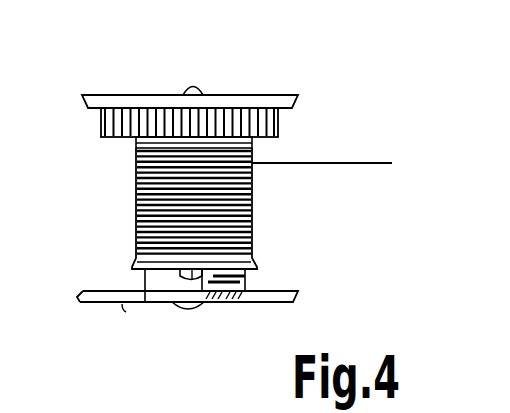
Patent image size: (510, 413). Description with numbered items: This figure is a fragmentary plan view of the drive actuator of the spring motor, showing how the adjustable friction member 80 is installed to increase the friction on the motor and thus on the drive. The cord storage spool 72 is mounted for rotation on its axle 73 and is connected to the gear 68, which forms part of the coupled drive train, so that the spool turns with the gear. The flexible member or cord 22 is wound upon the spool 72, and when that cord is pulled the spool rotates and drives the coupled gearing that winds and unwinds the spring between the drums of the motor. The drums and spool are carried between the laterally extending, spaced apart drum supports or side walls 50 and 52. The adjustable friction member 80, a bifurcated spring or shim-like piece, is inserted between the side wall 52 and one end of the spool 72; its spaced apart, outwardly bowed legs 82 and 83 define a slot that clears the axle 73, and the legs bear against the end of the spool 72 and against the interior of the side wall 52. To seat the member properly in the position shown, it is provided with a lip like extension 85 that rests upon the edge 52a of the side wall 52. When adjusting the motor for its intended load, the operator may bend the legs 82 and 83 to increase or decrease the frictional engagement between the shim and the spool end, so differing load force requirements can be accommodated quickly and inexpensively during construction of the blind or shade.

The drum support or side wall 50 is at (230, 102).
The gear 68 is at (168, 117).
The flexible member or cord 22 is at (347, 164).
The cord storage spool 72 is at (252, 209).
The bowed leg 82 is at (157, 278).
The bowed leg 83 is at (245, 276).
The axle 73 is at (195, 276).
The lip like extension 85 is at (221, 305).
The drum support or side wall 52 is at (128, 306).
The edge of side wall 52a is at (82, 294).
The adjustable friction member 80 is at (160, 305).